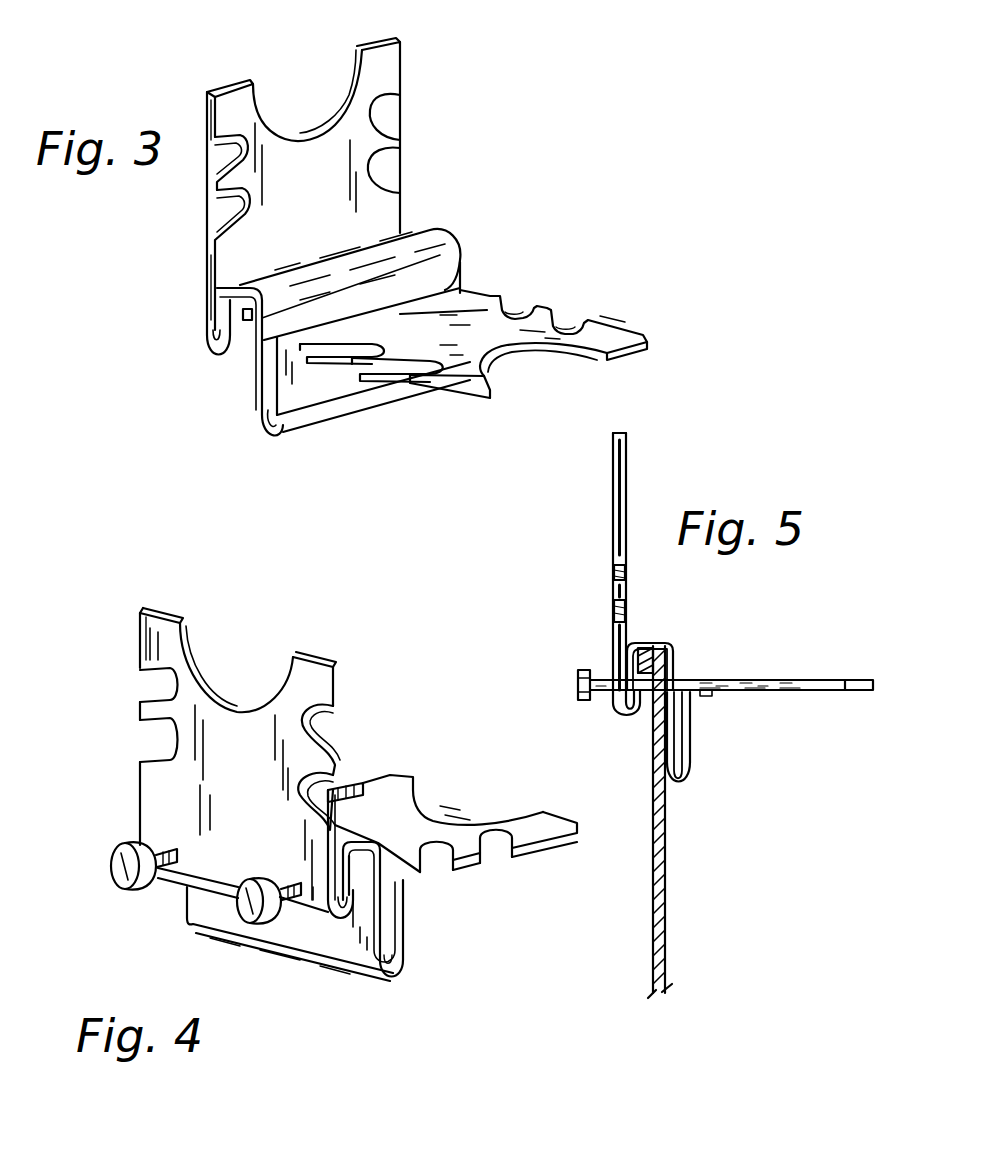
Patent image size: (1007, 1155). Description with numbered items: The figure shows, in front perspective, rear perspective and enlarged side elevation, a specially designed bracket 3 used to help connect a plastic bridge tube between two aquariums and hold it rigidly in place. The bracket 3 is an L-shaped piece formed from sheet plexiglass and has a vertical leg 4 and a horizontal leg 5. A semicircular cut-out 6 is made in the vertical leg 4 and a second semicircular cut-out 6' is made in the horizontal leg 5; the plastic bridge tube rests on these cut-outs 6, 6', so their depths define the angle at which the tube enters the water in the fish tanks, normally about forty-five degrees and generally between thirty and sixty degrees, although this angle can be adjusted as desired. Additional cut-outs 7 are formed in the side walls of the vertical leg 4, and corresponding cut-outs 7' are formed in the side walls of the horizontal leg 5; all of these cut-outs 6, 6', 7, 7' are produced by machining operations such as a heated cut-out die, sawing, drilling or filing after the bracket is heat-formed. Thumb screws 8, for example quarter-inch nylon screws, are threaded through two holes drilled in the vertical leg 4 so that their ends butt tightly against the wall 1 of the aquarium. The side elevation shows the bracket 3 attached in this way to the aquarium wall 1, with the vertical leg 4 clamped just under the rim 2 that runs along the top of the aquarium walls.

In FIG. 5, the aquarium wall 1 is at (665, 857).
In FIG. 5, the rim 2 is at (640, 648).
In FIG. 3, the bracket 3 is at (487, 243).
In FIG. 4, the bracket 3 is at (400, 742).
In FIG. 5, the bracket 3 is at (607, 577).
In FIG. 3, the vertical leg 4 is at (389, 145).
In FIG. 4, the vertical leg 4 is at (150, 723).
In FIG. 5, the vertical leg 4 is at (613, 517).
In FIG. 3, the horizontal leg 5 is at (487, 298).
In FIG. 4, the horizontal leg 5 is at (405, 790).
In FIG. 5, the horizontal leg 5 is at (810, 682).
In FIG. 3, the semicircular cut-out 6 is at (307, 83).
In FIG. 4, the semicircular cut-out 6 is at (239, 652).
In FIG. 3, the semicircular cut-out 6' is at (554, 374).
In FIG. 4, the semicircular cut-out 6' is at (478, 780).
In FIG. 3, the cut-outs 7 is at (313, 170).
In FIG. 4, the cut-outs 7 is at (224, 747).
In FIG. 5, the cut-outs 7 is at (605, 590).
In FIG. 3, the cut-outs 7' is at (520, 312).
In FIG. 4, the cut-outs 7' is at (441, 829).
In FIG. 5, the cut-outs 7' is at (749, 719).
In FIG. 3, the thumb screws 8 is at (242, 315).
In FIG. 4, the thumb screws 8 is at (110, 862).
In FIG. 5, the thumb screws 8 is at (572, 680).